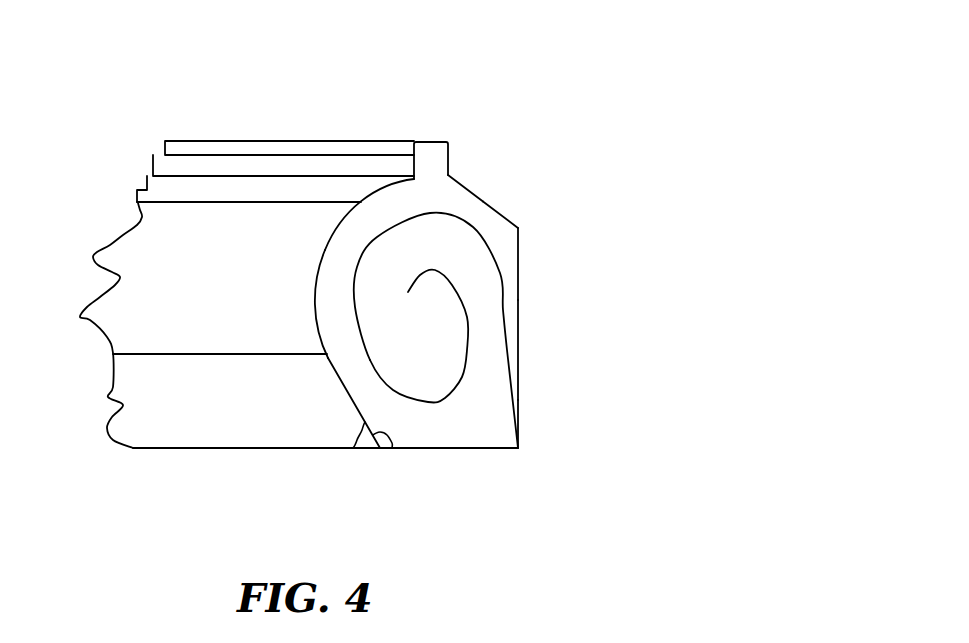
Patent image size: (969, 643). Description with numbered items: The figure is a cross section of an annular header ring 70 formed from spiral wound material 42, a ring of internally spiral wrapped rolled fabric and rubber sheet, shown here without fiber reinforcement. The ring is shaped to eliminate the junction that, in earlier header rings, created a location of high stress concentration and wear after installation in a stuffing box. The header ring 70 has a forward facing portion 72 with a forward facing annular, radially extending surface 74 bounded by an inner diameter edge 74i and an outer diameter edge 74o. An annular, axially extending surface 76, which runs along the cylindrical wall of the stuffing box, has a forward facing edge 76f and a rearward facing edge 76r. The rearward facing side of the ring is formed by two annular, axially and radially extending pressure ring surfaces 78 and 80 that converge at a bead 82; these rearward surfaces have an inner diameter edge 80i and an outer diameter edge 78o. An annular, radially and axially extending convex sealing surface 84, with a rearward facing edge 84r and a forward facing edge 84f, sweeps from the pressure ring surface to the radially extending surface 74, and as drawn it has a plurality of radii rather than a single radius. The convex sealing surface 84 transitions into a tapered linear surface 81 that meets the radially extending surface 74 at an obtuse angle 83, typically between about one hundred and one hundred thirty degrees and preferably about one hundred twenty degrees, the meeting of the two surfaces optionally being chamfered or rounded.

The annular header ring 70 is at (616, 137).
The pressure ring surface 80 is at (367, 193).
The inner diameter edge 80i is at (364, 200).
The bead 82 is at (432, 158).
The pressure ring surface 78 is at (460, 183).
The outer diameter edge 78o is at (508, 226).
The spiral wound material 42 is at (462, 242).
The obtuse angle 83 is at (388, 447).
The rearward facing edge 76r is at (518, 228).
The axially extending surface 76 is at (522, 312).
The forward facing edge 76f is at (520, 440).
The rearward facing edge 84r is at (352, 214).
The convex sealing surface 84 is at (318, 298).
The forward facing edge 84f is at (380, 448).
The linear surface 81 is at (337, 449).
The inner diameter edge 74i is at (380, 448).
The forward facing portion 72 is at (488, 428).
The forward facing surface 74 is at (495, 448).
The outer diameter edge 74o is at (518, 448).